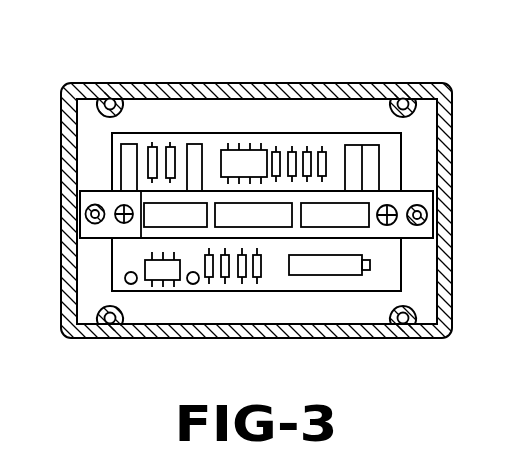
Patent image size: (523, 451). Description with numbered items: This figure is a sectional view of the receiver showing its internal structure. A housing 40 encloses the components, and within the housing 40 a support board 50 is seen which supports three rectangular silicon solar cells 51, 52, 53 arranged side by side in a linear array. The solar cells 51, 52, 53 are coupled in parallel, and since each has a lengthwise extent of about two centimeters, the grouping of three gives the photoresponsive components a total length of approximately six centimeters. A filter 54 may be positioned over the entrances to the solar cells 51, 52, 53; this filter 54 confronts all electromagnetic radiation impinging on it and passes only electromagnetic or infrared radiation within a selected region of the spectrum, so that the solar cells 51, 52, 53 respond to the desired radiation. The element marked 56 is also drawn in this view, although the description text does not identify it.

The housing 40 is at (227, 84).
The support board 50 is at (88, 207).
The silicon solar cell 51 is at (178, 217).
The silicon solar cell 52 is at (245, 218).
The silicon solar cell 53 is at (330, 218).
The filter 54 is at (412, 238).
The printed circuit board 56 is at (401, 143).